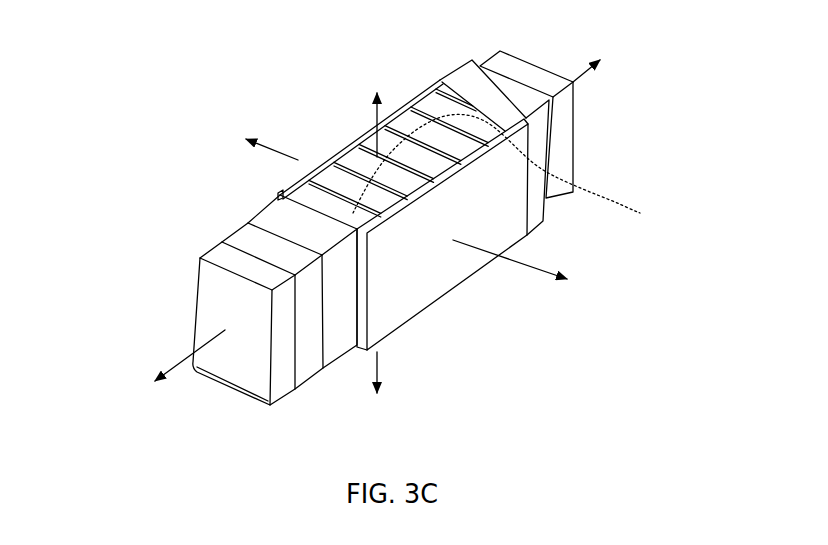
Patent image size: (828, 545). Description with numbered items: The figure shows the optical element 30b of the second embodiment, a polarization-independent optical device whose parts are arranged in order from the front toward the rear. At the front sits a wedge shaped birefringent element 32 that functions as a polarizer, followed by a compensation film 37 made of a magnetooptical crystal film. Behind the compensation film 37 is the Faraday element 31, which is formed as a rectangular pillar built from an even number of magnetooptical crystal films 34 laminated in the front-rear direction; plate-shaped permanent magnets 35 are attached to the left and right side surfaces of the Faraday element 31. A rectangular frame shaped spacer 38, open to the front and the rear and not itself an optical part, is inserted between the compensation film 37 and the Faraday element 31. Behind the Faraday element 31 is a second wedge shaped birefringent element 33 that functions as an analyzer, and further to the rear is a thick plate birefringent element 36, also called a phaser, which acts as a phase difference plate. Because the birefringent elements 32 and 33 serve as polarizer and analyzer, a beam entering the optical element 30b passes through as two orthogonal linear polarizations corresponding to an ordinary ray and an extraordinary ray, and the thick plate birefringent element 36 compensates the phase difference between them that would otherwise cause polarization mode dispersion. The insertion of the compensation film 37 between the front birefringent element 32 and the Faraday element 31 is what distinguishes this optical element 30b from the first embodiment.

The optical element 30b is at (252, 66).
The Faraday element 31 is at (512, 170).
The wedge shaped birefringent element 32 is at (218, 284).
The wedge shaped birefringent element 33 is at (533, 188).
The magnetooptical crystal films 34 is at (338, 185).
The permanent magnets 35 is at (358, 138).
The thick plate birefringent element 36 is at (563, 165).
The compensation film 37 is at (240, 244).
The spacer 38 is at (275, 215).